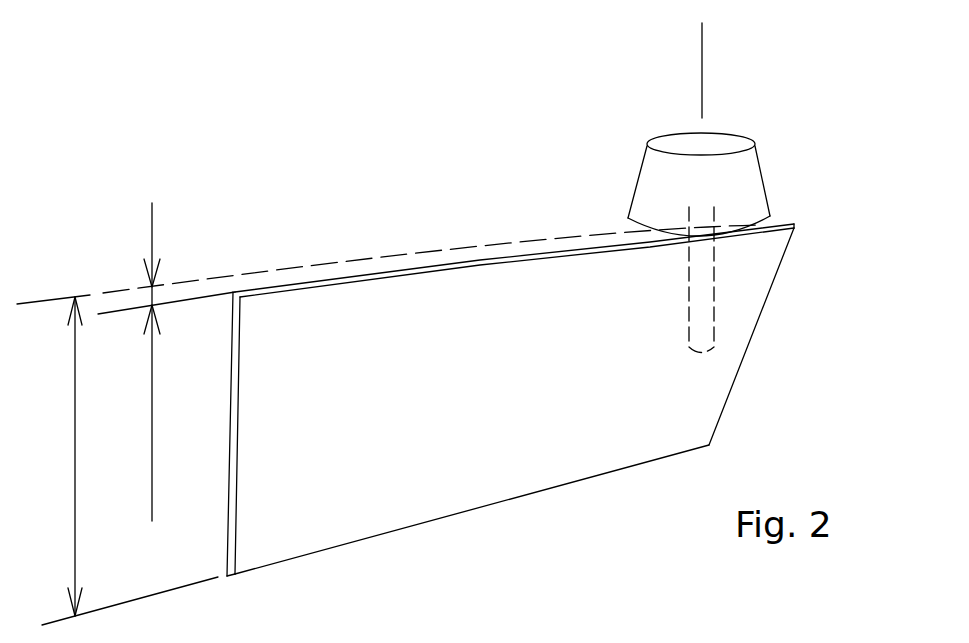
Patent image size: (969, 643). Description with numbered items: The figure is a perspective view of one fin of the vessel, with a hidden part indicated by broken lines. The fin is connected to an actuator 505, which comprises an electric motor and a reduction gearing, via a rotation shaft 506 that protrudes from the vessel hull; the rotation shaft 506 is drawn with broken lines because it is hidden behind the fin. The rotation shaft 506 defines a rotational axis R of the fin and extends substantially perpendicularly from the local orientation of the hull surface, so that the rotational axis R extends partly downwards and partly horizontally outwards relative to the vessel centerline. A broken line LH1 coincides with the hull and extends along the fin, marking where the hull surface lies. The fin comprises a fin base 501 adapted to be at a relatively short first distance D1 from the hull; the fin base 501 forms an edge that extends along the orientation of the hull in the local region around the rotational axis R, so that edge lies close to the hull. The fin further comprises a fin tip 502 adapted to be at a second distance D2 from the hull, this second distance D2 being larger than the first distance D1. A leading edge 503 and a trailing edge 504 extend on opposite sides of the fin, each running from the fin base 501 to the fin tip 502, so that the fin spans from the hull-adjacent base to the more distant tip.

The fin base 501 is at (494, 258).
The fin tip 502 is at (500, 502).
The leading edge 503 is at (768, 303).
The trailing edge 504 is at (223, 350).
The actuator 505 is at (763, 180).
The rotation shaft 506 is at (689, 287).
The rotational axis R is at (703, 85).
The broken line LH1 is at (387, 258).
The first distance D1 is at (167, 362).
The second distance D2 is at (117, 460).